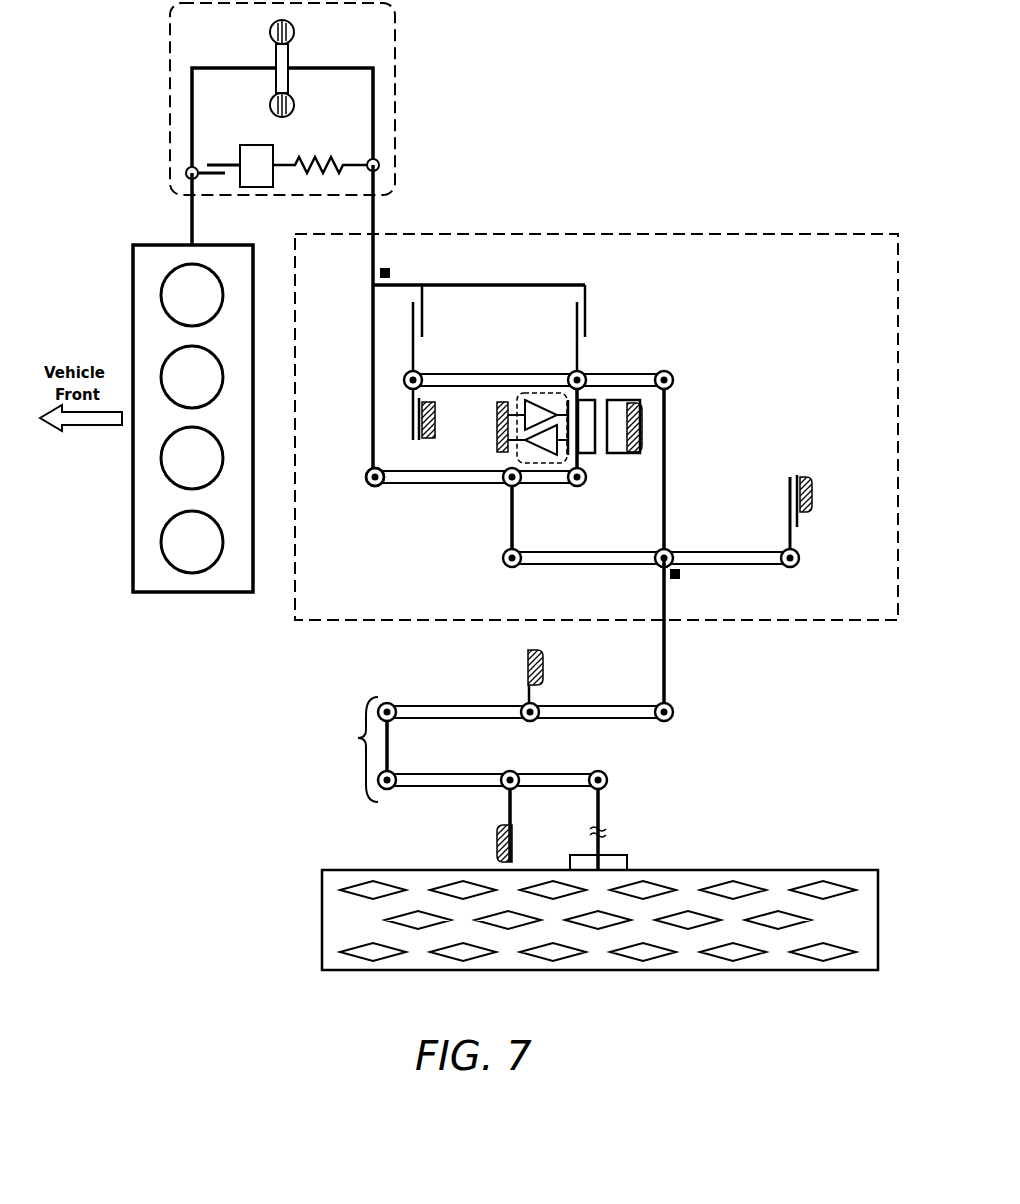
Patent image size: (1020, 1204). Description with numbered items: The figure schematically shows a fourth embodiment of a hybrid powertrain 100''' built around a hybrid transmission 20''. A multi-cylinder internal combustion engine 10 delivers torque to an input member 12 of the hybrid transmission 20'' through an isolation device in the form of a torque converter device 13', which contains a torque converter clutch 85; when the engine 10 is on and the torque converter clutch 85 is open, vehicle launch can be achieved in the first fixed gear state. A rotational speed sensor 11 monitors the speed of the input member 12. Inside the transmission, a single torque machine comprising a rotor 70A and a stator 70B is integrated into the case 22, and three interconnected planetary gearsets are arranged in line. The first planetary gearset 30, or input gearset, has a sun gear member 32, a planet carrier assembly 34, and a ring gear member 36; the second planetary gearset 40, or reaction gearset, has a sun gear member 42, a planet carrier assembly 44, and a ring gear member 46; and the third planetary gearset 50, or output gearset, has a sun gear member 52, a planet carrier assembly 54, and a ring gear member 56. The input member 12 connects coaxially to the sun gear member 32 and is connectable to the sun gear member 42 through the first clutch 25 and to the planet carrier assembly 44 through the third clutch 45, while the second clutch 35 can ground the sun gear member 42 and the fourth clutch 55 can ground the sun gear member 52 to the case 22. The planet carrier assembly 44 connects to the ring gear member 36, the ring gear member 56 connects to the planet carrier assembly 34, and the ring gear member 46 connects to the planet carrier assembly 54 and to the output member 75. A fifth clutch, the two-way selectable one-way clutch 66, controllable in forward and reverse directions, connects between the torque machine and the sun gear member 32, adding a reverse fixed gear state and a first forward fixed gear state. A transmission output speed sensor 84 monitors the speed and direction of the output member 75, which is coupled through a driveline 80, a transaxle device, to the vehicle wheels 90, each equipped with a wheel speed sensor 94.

The engine 10 is at (148, 240).
The hybrid powertrain 100''' is at (153, 419).
The torque converter device 13' is at (327, 99).
The torque converter clutch 85 is at (229, 165).
The input member 12 is at (377, 203).
The hybrid transmission 20'' is at (544, 456).
The rotational speed sensor 11 is at (399, 272).
The clutch C1 25 is at (448, 336).
The clutch C2 35 is at (461, 436).
The clutch C3 45 is at (612, 336).
The clutch C4 55 is at (838, 519).
The second planetary gearset 40 is at (400, 381).
The sun gear member 42 is at (426, 376).
The planet carrier assembly 44 is at (586, 373).
The ring gear member 46 is at (672, 373).
The first planetary gearset 30 is at (366, 466).
The sun gear member 32 is at (366, 486).
The planet carrier assembly 34 is at (520, 486).
The ring gear member 36 is at (586, 484).
The third planetary gearset 50 is at (498, 549).
The sun gear member 52 is at (800, 564).
The planet carrier assembly 54 is at (675, 552).
The ring gear member 56 is at (505, 565).
The two-way selectable one-way clutch 66 is at (516, 438).
The rotor 70A is at (592, 455).
The stator 70B is at (619, 449).
The case 22 is at (498, 405).
The transmission output speed sensor 84 is at (686, 578).
The output member 75 is at (668, 652).
The driveline 80 is at (355, 738).
The vehicle wheels 90 is at (316, 898).
The sensor 94 is at (625, 865).